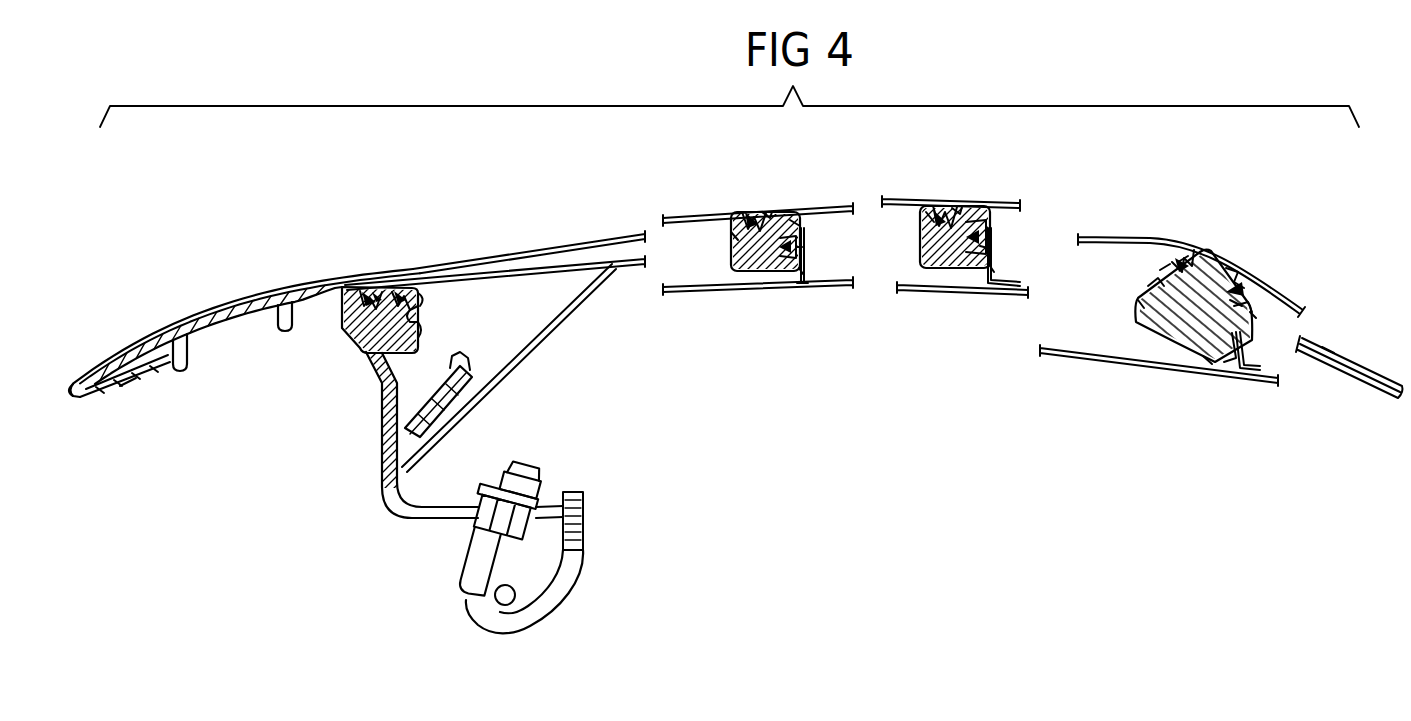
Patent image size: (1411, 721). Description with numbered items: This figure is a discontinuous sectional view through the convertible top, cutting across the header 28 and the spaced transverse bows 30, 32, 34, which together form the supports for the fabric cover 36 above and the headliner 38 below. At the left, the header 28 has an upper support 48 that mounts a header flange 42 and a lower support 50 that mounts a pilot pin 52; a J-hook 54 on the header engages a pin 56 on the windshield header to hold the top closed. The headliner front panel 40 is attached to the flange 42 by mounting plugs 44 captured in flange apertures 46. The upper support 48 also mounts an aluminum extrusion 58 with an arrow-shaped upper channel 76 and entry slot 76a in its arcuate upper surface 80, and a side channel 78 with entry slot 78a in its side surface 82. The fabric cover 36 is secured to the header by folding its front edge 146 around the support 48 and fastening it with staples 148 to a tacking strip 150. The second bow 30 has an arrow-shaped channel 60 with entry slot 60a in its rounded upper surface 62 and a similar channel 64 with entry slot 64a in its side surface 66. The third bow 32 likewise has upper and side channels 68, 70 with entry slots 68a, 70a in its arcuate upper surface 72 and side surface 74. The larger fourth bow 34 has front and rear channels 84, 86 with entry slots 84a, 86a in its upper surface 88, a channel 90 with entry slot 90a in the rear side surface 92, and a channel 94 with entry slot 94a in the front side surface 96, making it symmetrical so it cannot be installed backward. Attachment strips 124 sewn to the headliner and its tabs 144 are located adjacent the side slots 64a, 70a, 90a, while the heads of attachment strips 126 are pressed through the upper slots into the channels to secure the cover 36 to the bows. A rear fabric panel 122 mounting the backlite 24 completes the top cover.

The backlite 24 is at (1392, 392).
The header 28 is at (370, 430).
The #2 bow 30 is at (730, 273).
The #3 bow 32 is at (920, 270).
The #4 bow 34 is at (1138, 334).
The fabric cover 36 is at (655, 226).
The headliner 38 is at (648, 268).
The front panel 40 is at (525, 351).
The header flange 42 is at (465, 360).
The front panel mounting plugs 44 is at (440, 421).
The flange apertures 46 is at (442, 414).
The upper support 48 is at (224, 322).
The lower support 50 is at (379, 395).
The pilot pin 52 is at (465, 578).
The J-hook 54 is at (563, 592).
The pin 56 is at (492, 604).
The extrusion 58 is at (356, 348).
The channel 60 is at (732, 241).
The entry slot 60a is at (746, 212).
The upper surface 62 is at (770, 213).
The channel 64 is at (802, 241).
The entry slot 64a is at (802, 251).
The side surface 66 is at (801, 222).
The upper channel 68 is at (938, 207).
The entry slot 68a is at (933, 210).
The side channel 70 is at (978, 237).
The entry slot 70a is at (990, 249).
The upper surface 72 is at (957, 211).
The side surface 74 is at (991, 225).
The upper channel 76 is at (372, 297).
The entry slot 76a is at (363, 291).
The side channel 78 is at (428, 311).
The entry slot 78a is at (419, 291).
The upper surface 80 is at (399, 292).
The side surface 82 is at (420, 324).
The front channel 84 is at (1185, 251).
The entry slot 84a is at (1176, 258).
The rear channel 86 is at (1247, 283).
The entry slot 86a is at (1250, 291).
The upper surface 88 is at (1240, 268).
The channel 90 is at (1256, 301).
The entry slot 90a is at (1208, 361).
The rear side surface 92 is at (1238, 361).
The channel 94 is at (1148, 288).
The entry slot 94a is at (1163, 273).
The front side surface 96 is at (1140, 300).
The rear fabric panel 122 is at (1330, 348).
The attachment strip 124 is at (377, 291).
The attachment strip 126 is at (753, 213).
The tabs 144 is at (791, 284).
The front edge 146 is at (78, 392).
The staples 148 is at (133, 378).
The tacking strip 150 is at (165, 366).